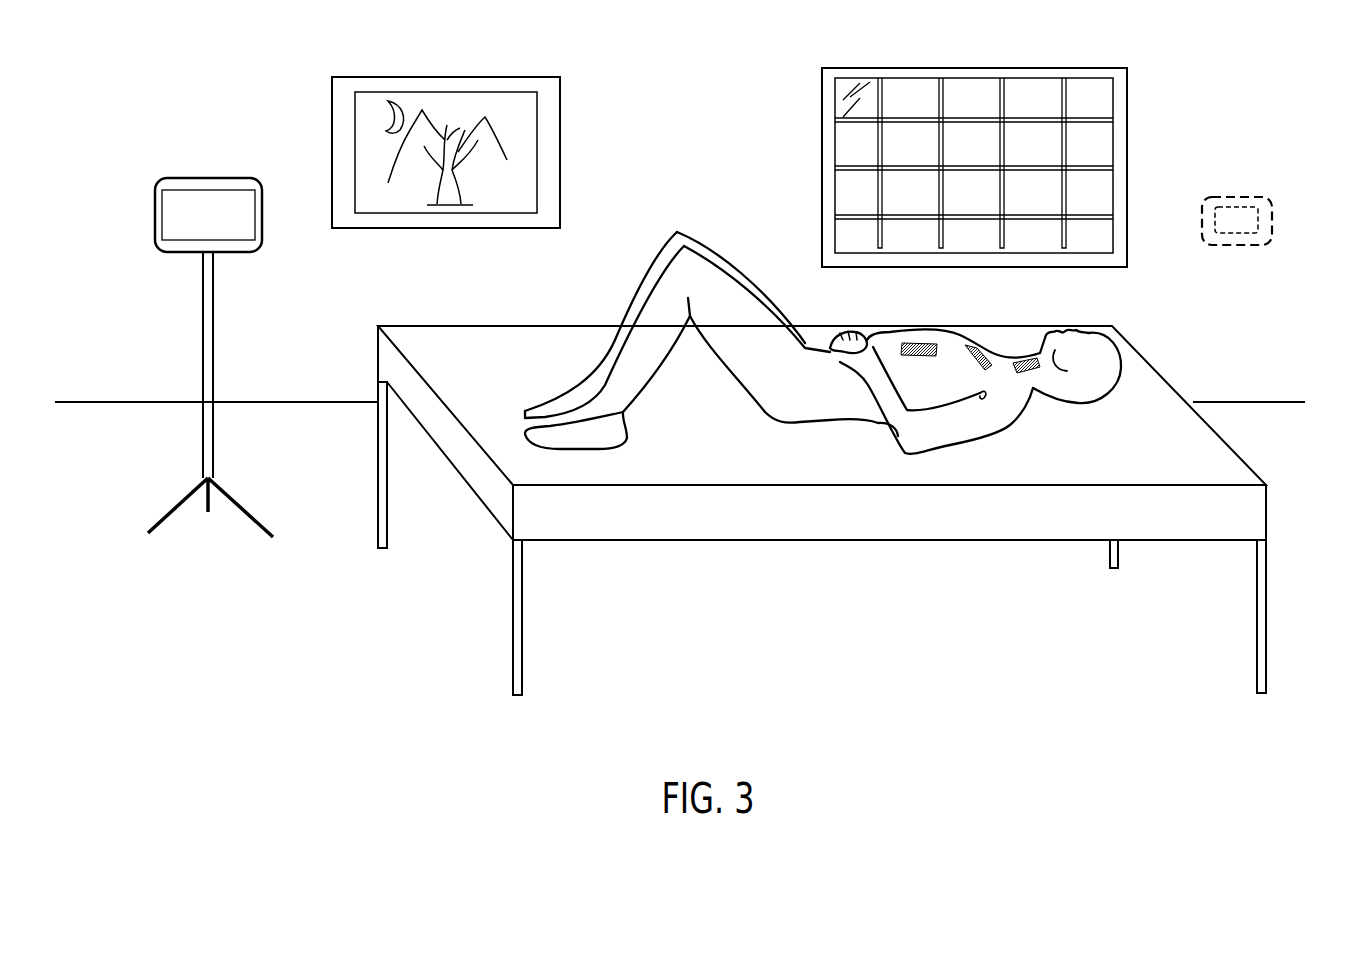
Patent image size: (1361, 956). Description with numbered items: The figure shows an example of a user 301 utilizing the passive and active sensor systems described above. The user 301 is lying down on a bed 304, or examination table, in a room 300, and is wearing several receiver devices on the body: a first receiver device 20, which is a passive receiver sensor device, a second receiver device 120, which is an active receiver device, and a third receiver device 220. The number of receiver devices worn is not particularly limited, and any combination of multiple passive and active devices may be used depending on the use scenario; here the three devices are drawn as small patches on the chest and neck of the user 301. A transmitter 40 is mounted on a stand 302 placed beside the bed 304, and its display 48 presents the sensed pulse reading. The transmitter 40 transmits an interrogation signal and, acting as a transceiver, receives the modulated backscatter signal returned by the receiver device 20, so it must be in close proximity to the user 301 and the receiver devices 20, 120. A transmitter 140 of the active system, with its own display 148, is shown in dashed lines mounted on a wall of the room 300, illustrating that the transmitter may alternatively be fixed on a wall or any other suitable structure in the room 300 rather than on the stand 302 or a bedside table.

The receiver device 20 is at (1027, 352).
The transmitter 40 is at (179, 197).
The display 48 is at (213, 193).
The receiver device 120 is at (977, 342).
The transmitter 140 is at (1267, 201).
The display 148 is at (1228, 207).
The third receiver device 220 is at (915, 342).
The room 300 is at (1226, 90).
The user 301 is at (822, 487).
The stand 302 is at (213, 365).
The bed 304 is at (1123, 459).